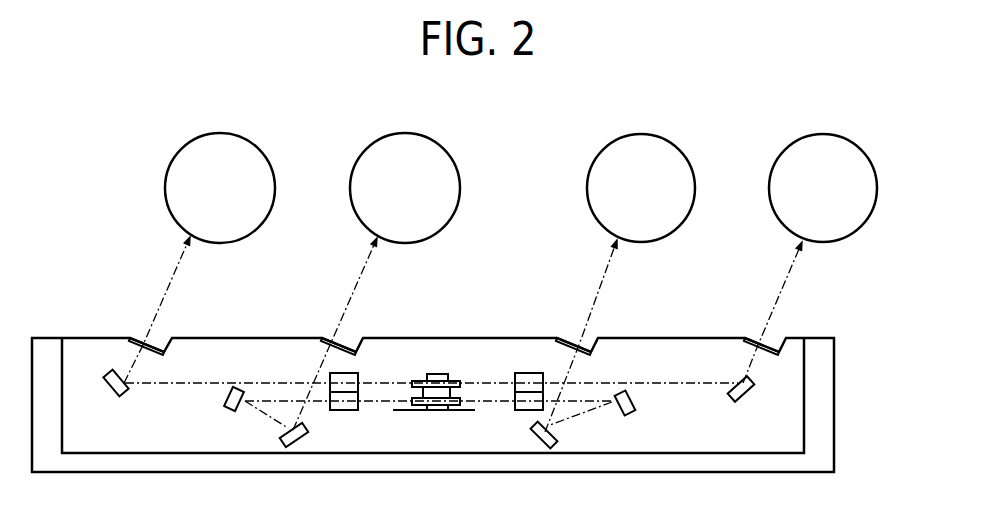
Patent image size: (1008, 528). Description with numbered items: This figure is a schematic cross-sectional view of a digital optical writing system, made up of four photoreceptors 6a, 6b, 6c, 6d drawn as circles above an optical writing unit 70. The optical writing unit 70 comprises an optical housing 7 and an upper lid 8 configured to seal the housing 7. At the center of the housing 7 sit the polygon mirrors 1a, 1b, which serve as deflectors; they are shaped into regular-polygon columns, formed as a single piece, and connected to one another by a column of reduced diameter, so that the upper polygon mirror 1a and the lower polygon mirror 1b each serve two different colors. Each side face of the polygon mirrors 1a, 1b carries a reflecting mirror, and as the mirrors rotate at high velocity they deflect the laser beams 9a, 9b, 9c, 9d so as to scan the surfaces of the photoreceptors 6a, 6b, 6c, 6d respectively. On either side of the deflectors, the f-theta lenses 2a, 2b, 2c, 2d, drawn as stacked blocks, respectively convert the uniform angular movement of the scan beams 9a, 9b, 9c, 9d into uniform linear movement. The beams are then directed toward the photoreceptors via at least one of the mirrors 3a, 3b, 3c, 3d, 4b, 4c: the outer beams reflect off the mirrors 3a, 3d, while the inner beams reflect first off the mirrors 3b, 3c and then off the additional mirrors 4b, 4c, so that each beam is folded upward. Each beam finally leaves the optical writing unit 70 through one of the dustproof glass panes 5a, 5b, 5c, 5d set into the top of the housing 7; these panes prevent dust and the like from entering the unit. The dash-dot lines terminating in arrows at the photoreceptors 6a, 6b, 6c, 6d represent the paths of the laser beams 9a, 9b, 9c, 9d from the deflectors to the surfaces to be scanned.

The polygon mirror 1a is at (423, 380).
The polygon mirror 1b is at (423, 411).
The f-theta lens 2a is at (515, 376).
The f-theta lens 2b is at (523, 409).
The f-theta lens 2c is at (350, 409).
The f-theta lens 2d is at (359, 376).
The mirror 3a is at (745, 394).
The mirror 3b is at (635, 407).
The mirror 3c is at (228, 411).
The mirror 3d is at (113, 393).
The mirror 4b is at (544, 448).
The mirror 4c is at (294, 448).
The dustproof glass pane 5a is at (772, 339).
The dustproof glass pane 5b is at (587, 340).
The dustproof glass pane 5c is at (342, 339).
The dustproof glass pane 5d is at (158, 339).
The photoreceptor 6a is at (850, 150).
The photoreceptor 6b is at (670, 150).
The photoreceptor 6c is at (433, 150).
The photoreceptor 6d is at (247, 152).
The optical housing 7 is at (835, 360).
The upper lid 8 is at (78, 338).
The laser beam 9a is at (778, 297).
The laser beam 9b is at (598, 288).
The laser beam 9c is at (353, 292).
The laser beam 9d is at (167, 283).
The optical writing unit 70 is at (882, 386).